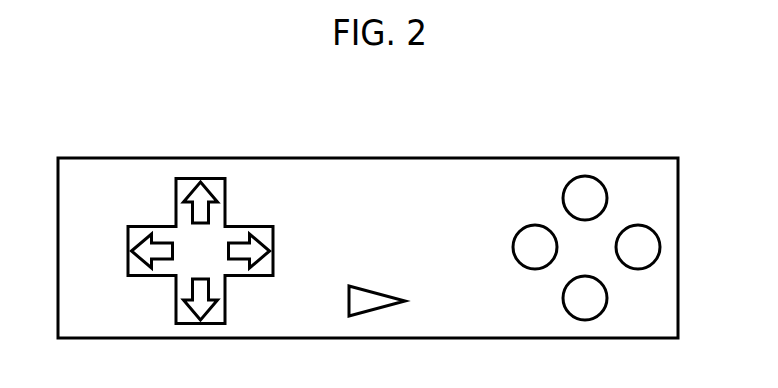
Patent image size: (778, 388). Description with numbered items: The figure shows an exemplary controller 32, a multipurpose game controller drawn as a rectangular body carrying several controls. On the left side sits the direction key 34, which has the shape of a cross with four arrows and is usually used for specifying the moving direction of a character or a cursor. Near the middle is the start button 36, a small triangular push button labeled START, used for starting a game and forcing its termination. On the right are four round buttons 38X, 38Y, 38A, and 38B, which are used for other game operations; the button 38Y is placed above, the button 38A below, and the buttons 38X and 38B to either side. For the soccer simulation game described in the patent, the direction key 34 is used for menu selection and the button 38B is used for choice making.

The controller 32 is at (112, 158).
The direction key 34 is at (225, 200).
The start button 36 is at (349, 301).
The button 38Y is at (563, 198).
The button 38X is at (513, 247).
The button 38A is at (563, 298).
The button 38B is at (660, 247).